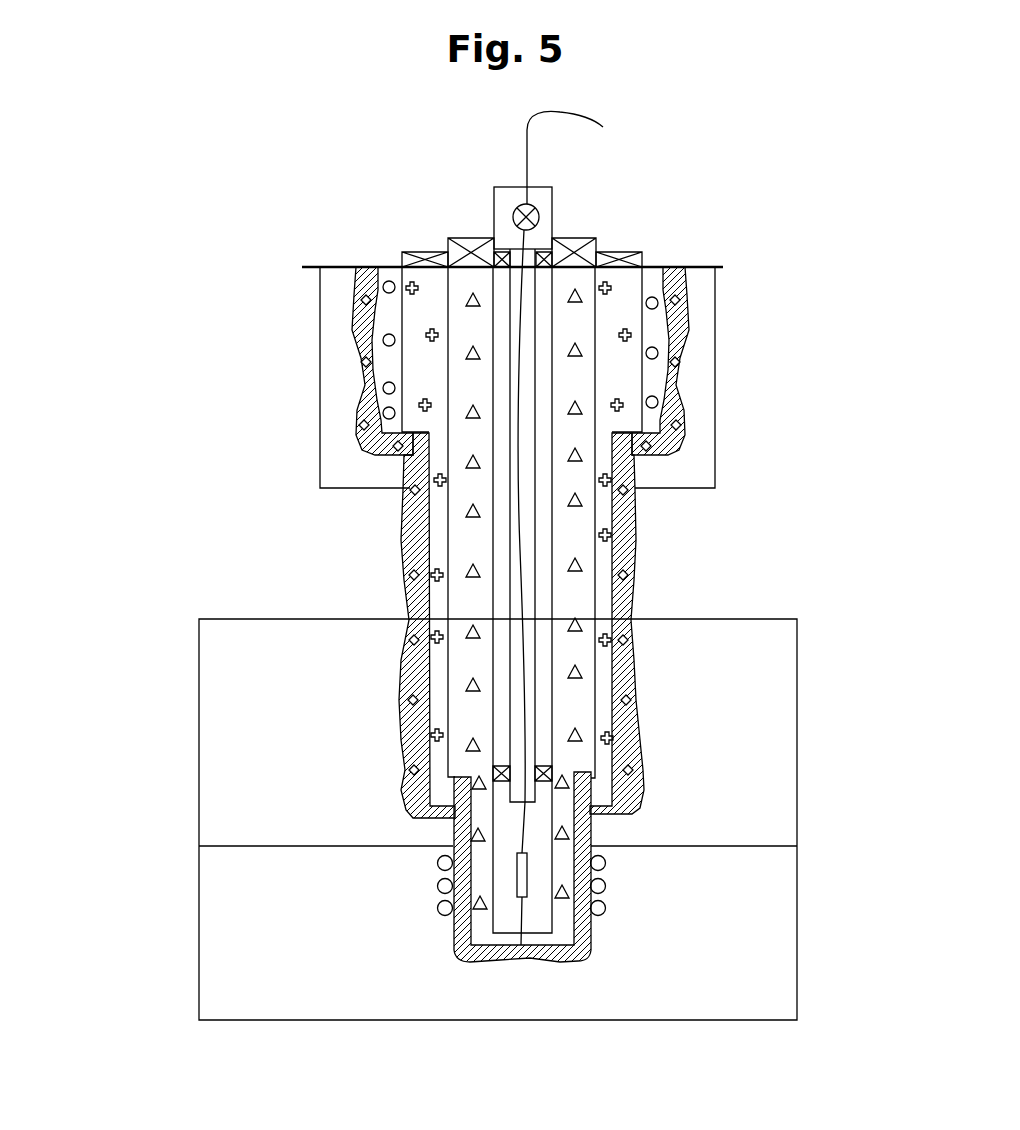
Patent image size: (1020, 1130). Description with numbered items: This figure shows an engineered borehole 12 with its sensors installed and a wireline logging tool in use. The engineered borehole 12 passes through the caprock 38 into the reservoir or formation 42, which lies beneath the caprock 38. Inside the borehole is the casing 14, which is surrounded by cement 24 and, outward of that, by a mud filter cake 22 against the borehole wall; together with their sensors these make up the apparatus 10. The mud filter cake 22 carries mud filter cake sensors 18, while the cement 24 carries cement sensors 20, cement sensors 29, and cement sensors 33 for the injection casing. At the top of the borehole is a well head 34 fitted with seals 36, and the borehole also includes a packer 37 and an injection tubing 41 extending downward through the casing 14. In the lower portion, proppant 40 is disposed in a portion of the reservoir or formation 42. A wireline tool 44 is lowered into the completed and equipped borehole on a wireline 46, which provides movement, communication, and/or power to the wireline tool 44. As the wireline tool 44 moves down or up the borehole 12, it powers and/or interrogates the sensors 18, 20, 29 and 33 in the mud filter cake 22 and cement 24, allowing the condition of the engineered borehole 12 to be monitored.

The apparatus 10 is at (291, 311).
The engineered borehole 12 is at (473, 214).
The casing 14 is at (401, 240).
The mud filter cake sensors 18 is at (680, 383).
The cement sensors 20 is at (380, 340).
The mud filter cake 22 is at (683, 348).
The cement 24 is at (382, 320).
The cement sensors 29 is at (408, 597).
The cement sensors for the injection casing 33 is at (482, 912).
The well head 34 is at (552, 203).
The seals 36 is at (590, 238).
The packer 37 is at (493, 773).
The caprock 38 is at (765, 697).
The proppant 40 is at (398, 884).
The injection tubing 41 is at (535, 708).
The formation 42 is at (765, 950).
The wireline tool 44 is at (521, 945).
The wireline 46 is at (587, 132).